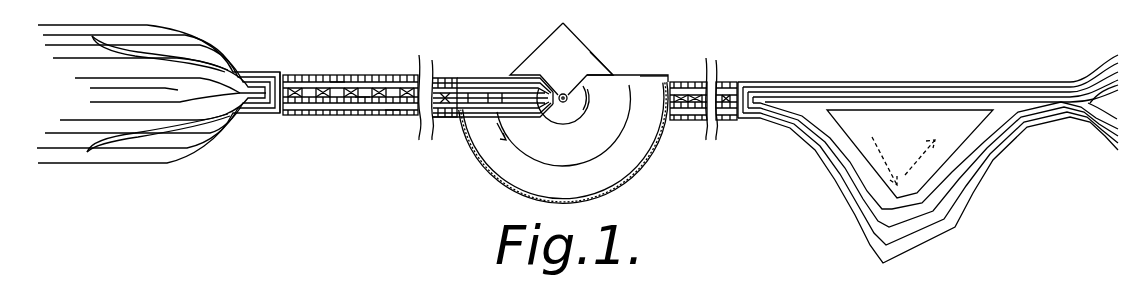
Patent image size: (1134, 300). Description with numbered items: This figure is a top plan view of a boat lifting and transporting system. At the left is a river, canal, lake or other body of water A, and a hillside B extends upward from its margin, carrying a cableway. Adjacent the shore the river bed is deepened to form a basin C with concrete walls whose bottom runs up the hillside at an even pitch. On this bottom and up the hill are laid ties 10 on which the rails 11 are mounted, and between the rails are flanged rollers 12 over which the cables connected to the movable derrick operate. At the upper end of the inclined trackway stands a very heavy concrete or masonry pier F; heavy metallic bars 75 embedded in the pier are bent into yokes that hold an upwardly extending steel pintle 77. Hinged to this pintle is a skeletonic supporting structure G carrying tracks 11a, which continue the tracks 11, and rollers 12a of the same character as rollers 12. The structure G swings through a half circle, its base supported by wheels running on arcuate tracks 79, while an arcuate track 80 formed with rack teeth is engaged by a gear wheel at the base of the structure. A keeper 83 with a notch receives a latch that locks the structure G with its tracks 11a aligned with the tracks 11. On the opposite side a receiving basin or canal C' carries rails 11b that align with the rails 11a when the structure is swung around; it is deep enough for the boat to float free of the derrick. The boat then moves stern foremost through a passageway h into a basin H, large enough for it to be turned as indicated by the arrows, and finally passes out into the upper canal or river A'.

The body of water A is at (152, 94).
The hillside B is at (365, 76).
The basin C is at (274, 109).
The ties 10 is at (345, 115).
The rails 11 is at (372, 115).
The flanged rollers 12 is at (401, 115).
The tracks 11a is at (478, 80).
The rollers 12a is at (470, 100).
The skeletonic supporting structure G is at (490, 82).
The pier F is at (583, 55).
The metallic bars 75 is at (600, 63).
The keeper 83 is at (665, 80).
The pintle 77 is at (577, 105).
The arcuate tracks 79 is at (557, 121).
The arcuate track 80 is at (523, 190).
The rails 11b is at (690, 120).
The receiving basin C' is at (734, 117).
The passageway h is at (780, 113).
The basin H is at (928, 182).
The canal or river A' is at (1078, 126).